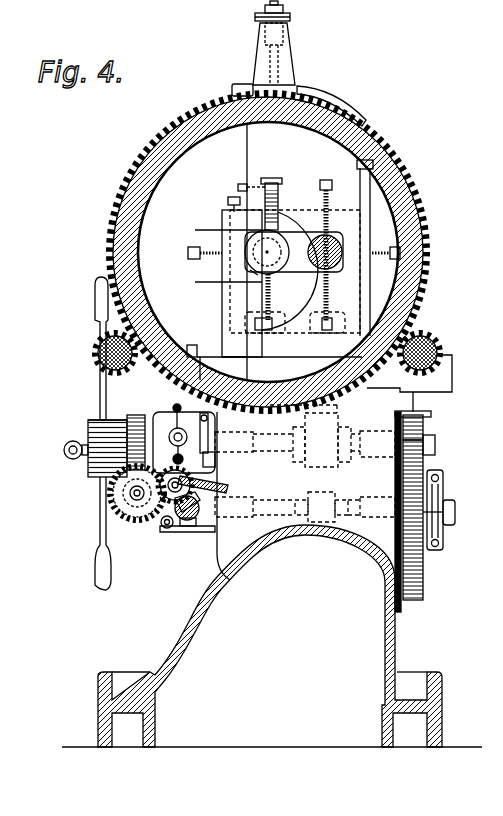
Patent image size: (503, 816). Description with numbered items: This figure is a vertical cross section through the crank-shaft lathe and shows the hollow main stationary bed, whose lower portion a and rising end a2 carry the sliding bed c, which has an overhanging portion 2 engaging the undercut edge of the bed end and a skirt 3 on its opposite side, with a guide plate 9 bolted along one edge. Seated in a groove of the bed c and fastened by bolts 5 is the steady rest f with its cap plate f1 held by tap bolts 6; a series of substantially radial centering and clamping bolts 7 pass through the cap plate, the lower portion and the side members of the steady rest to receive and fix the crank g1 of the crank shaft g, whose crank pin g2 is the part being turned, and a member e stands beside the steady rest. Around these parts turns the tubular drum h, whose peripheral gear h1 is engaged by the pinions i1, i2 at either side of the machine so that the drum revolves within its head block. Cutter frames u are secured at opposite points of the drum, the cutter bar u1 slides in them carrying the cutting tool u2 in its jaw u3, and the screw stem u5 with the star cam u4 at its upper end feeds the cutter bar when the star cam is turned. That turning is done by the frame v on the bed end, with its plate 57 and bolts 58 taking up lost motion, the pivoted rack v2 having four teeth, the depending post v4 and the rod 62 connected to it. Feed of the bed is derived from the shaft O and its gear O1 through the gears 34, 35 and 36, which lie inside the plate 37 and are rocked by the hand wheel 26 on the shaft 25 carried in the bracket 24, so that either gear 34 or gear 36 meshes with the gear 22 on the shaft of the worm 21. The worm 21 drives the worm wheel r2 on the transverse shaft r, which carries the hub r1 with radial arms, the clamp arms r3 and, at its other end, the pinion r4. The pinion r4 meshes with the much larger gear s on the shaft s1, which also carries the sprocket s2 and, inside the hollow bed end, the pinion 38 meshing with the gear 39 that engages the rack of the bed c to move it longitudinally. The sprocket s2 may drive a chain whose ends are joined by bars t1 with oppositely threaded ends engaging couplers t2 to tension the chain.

The drum h is at (160, 173).
The peripheral gear h1 is at (150, 150).
The cutter frames u is at (242, 84).
The cutter bar u1 is at (269, 252).
The cutting tool u2 is at (278, 190).
The jaw u3 is at (238, 188).
The star cam u4 is at (291, 17).
The screw stem u5 is at (282, 64).
The tap bolts 6 is at (228, 200).
The centering and clamping bolts 7 is at (188, 254).
The steady rest f is at (222, 298).
The cap plate f1 is at (222, 218).
The shaft g is at (330, 237).
The crank g1 is at (298, 245).
The crank pin g2 is at (256, 262).
The guide plate 9 is at (192, 345).
The overhanging portion 2 is at (228, 358).
The bolts 5 is at (262, 332).
The plate e is at (371, 300).
The pinion i1 is at (92, 350).
The pinion i2 is at (442, 347).
The sliding bed c is at (453, 372).
The skirt 3 is at (433, 403).
The hub r1 is at (88, 430).
The worm wheel r2 is at (136, 415).
The clamp arms r3 is at (64, 453).
The pinion r4 is at (424, 432).
The shaft r is at (436, 445).
The bracket 24 is at (184, 442).
The shaft 25 is at (186, 432).
The hand wheel 26 is at (175, 407).
The gear 34 is at (169, 455).
The plate 57 is at (200, 450).
The bolts 58 is at (230, 440).
The worm 21 is at (128, 513).
The gear 22 is at (137, 508).
The gear 36 is at (168, 503).
The plate 37 is at (167, 529).
The shaft O is at (184, 521).
The gear O1 is at (192, 527).
The rod 62 is at (196, 528).
The frame v is at (216, 460).
The pivot rack v2 is at (229, 489).
The depending post v4 is at (216, 530).
The gear 35 is at (255, 507).
The pinion 38 is at (343, 517).
The gear 39 is at (338, 450).
The shaft s1 is at (282, 507).
The gear s is at (417, 512).
The sprocket s2 is at (442, 524).
The bars t1 is at (435, 547).
The couplers t2 is at (440, 482).
The lower portion a is at (272, 636).
The rising end a2 is at (200, 610).